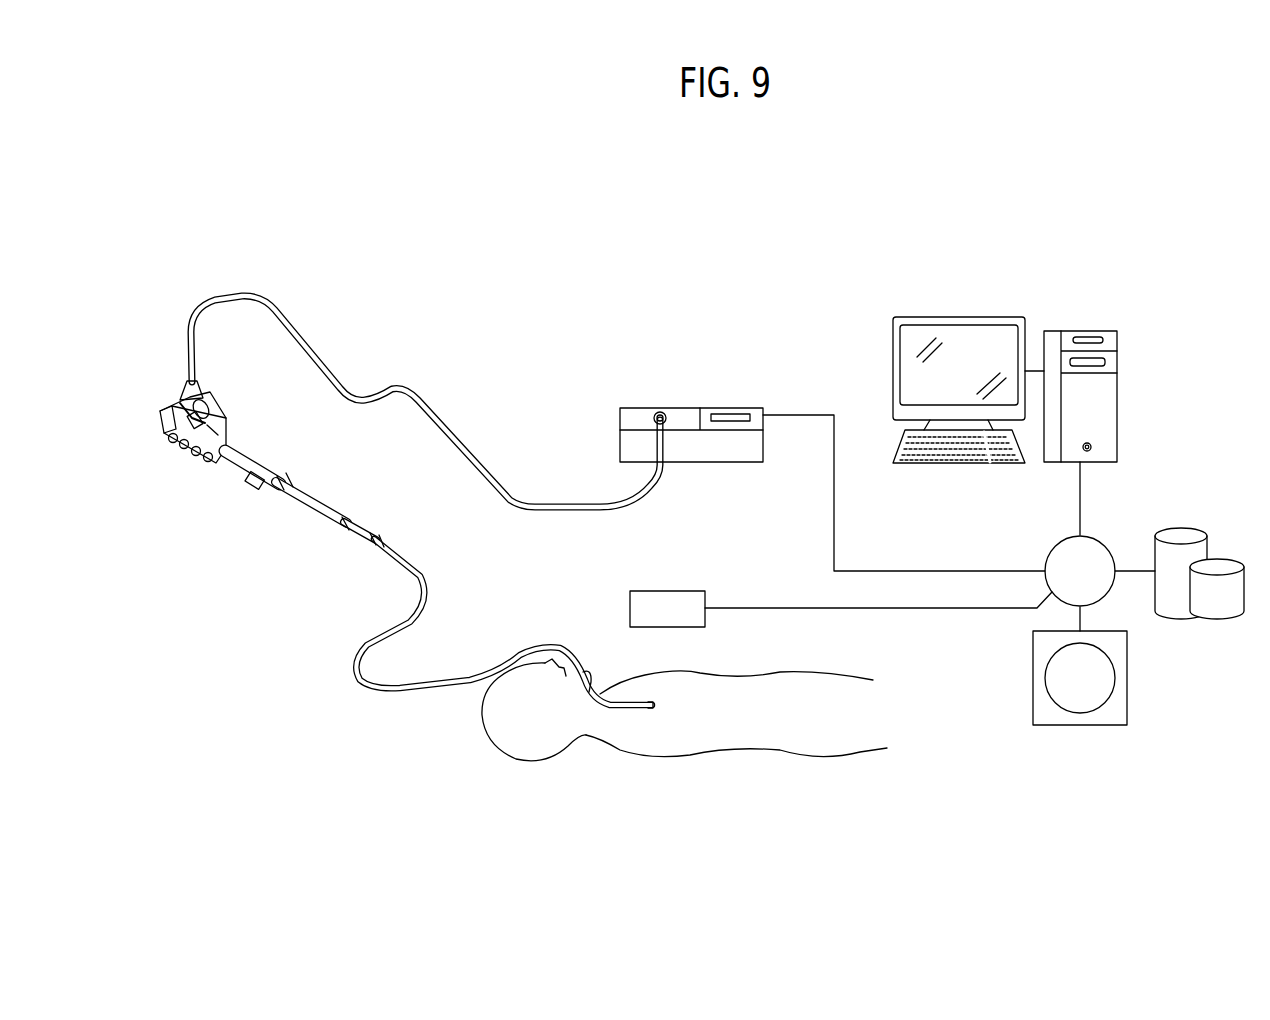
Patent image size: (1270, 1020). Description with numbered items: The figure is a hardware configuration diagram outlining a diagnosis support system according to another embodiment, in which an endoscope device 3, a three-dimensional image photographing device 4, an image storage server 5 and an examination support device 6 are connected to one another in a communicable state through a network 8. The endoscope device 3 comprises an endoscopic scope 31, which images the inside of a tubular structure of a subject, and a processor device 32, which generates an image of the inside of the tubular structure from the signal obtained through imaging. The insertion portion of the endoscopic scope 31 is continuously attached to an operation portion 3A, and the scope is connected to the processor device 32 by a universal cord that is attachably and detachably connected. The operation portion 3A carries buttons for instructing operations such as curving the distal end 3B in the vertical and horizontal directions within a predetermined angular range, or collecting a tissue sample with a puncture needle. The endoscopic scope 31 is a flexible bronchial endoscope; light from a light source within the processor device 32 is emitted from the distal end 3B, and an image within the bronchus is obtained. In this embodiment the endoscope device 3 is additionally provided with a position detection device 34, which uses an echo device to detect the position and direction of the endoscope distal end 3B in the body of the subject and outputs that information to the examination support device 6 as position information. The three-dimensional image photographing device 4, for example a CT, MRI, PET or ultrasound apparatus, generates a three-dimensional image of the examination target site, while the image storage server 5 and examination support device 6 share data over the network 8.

The endoscope device 3 is at (531, 321).
The operation portion 3A is at (199, 480).
The distal end 3B is at (650, 710).
The endoscopic scope 31 is at (325, 543).
The processor device 32 is at (772, 411).
The position detection device 34 is at (690, 591).
The three-dimensional image photographing device 4 is at (1071, 726).
The image storage server 5 is at (1180, 613).
The examination support device 6 is at (1087, 331).
The network 8 is at (1101, 545).